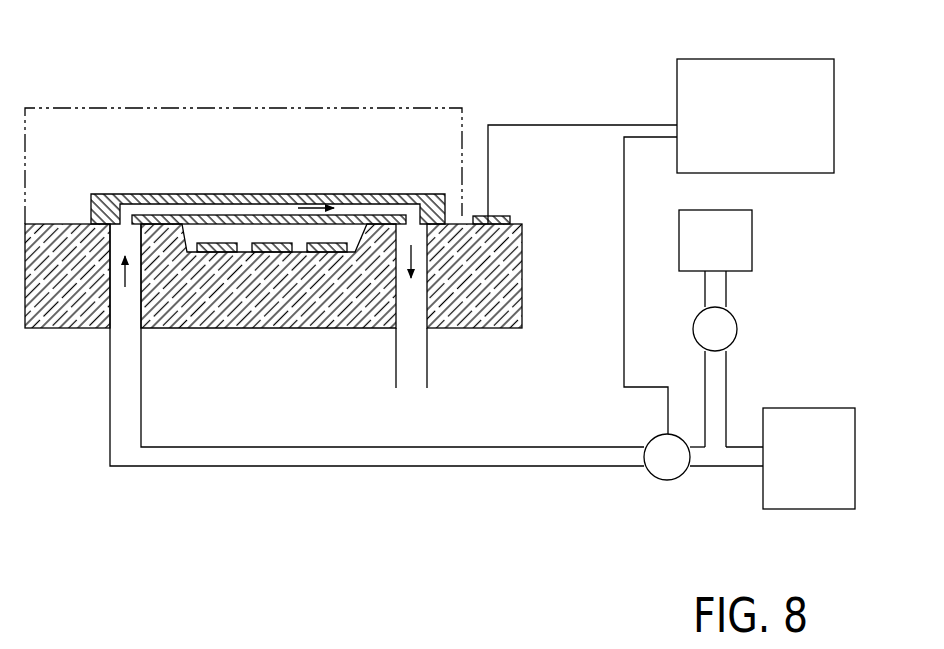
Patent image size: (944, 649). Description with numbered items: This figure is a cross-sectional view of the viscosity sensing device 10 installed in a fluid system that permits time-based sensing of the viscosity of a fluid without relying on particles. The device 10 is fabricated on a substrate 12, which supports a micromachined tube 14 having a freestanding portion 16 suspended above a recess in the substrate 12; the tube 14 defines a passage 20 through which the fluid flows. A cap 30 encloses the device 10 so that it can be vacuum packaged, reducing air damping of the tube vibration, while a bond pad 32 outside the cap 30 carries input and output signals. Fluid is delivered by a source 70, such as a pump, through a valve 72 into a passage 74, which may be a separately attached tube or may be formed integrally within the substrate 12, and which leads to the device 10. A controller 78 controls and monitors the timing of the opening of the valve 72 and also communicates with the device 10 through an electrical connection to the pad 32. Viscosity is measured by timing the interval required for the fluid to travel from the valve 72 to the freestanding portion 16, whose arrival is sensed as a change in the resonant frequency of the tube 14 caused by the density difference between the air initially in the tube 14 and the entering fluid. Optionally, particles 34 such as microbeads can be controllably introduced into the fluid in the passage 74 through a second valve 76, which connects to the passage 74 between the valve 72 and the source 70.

The viscosity sensing device 10 is at (266, 58).
The substrate 12 is at (510, 277).
The tube 14 is at (240, 176).
The freestanding portion 16 is at (338, 193).
The passage 20 is at (187, 207).
The cap 30 is at (443, 107).
The bond pad 32 is at (503, 215).
The particles 34 is at (735, 248).
The source 70 is at (832, 425).
The valve 72 is at (667, 460).
The passage 74 is at (485, 459).
The second valve 76 is at (723, 327).
The controller 78 is at (817, 150).